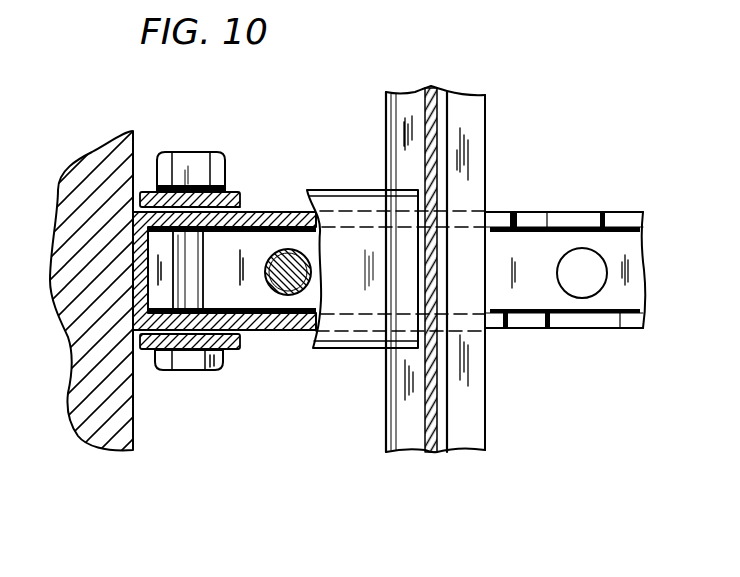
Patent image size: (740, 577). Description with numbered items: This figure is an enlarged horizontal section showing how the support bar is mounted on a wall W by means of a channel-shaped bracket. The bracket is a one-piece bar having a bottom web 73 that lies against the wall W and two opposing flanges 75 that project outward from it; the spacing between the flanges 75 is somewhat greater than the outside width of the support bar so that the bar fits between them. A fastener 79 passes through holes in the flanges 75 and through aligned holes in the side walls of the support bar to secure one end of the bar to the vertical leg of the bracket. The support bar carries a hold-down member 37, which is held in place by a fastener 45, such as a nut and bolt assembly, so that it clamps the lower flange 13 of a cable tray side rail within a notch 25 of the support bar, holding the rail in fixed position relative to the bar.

The lower flange 13 is at (488, 140).
The notch 25 is at (542, 220).
The hold-down member 37 is at (370, 352).
The fastener 45 is at (293, 249).
The bottom web 73 is at (50, 282).
The flanges 75 is at (246, 200).
The fastener 79 is at (193, 371).
The wall W is at (133, 200).